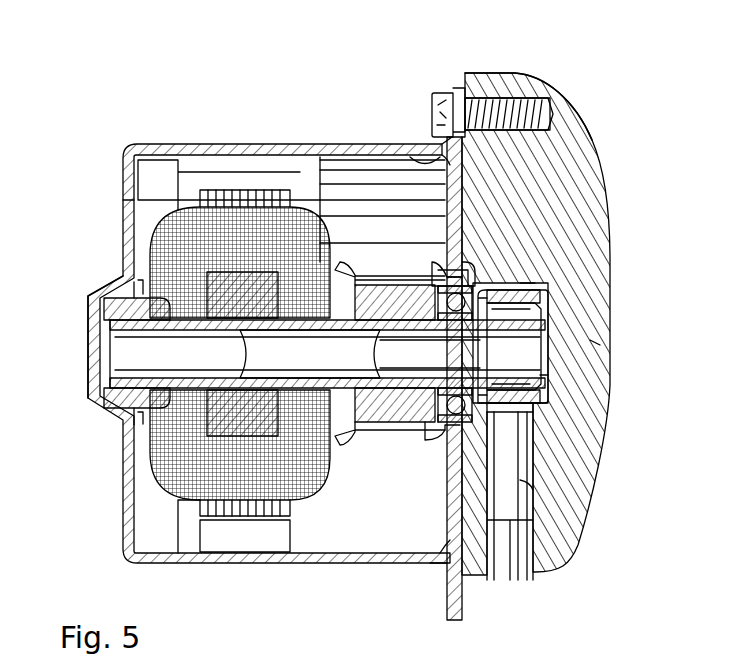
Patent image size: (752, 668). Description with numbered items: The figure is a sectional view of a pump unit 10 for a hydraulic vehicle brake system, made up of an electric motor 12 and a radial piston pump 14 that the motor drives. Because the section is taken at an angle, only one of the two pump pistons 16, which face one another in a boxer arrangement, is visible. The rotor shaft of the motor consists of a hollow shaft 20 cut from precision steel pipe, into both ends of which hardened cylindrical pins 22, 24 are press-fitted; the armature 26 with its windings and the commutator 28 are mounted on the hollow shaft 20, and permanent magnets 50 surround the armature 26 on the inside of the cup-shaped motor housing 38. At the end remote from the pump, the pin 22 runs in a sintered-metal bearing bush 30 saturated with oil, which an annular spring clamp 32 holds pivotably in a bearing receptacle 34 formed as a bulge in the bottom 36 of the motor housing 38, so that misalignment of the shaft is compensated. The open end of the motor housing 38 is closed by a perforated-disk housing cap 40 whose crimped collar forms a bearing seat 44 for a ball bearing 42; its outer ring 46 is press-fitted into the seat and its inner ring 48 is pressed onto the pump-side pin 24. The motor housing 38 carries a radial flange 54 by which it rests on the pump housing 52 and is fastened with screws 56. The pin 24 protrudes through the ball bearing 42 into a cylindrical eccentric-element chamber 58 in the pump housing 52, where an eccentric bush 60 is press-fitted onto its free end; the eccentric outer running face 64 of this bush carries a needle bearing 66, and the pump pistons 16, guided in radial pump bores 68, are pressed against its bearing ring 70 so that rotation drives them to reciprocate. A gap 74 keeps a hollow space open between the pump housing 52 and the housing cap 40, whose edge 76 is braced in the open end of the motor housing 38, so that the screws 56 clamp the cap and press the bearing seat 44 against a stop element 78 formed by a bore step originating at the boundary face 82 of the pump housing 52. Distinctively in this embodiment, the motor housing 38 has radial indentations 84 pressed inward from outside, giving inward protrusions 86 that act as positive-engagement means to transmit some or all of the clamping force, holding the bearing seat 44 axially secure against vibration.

The pump unit 10 is at (608, 593).
The electric motor 12 is at (295, 590).
The radial piston pump 14 is at (607, 479).
The pump pistons 16 is at (538, 498).
The hollow shaft 20 is at (314, 330).
The pin 22 is at (162, 358).
The pin 24 is at (400, 358).
The armature 26 is at (165, 480).
The commutator 28 is at (386, 425).
The bearing bush 30 is at (100, 400).
The spring clamp 32 is at (128, 420).
The bearing receptacle 34 is at (104, 297).
The bottom 36 is at (124, 200).
The motor housing 38 is at (258, 148).
The housing cap 40 is at (447, 186).
The ball bearing 42 is at (457, 323).
The bearing seat 44 is at (446, 272).
The outer ring 46 is at (432, 274).
The inner ring 48 is at (426, 428).
The permanent magnets 50 is at (232, 165).
The pump housing 52 is at (596, 343).
The radial flange 54 is at (448, 93).
The screws 56 is at (496, 102).
The eccentric-element chamber 58 is at (548, 300).
The eccentric bush 60 is at (504, 356).
The running face 64 is at (548, 284).
The needle bearing 66 is at (548, 376).
The pump bores 68 is at (520, 562).
The bearing ring 70 is at (535, 405).
The gap 74 is at (465, 258).
The edge 76 is at (465, 212).
The stop element 78 is at (465, 273).
The boundary face 82 is at (458, 88).
The radial indentations 84 is at (447, 575).
The protrusions 86 is at (436, 150).